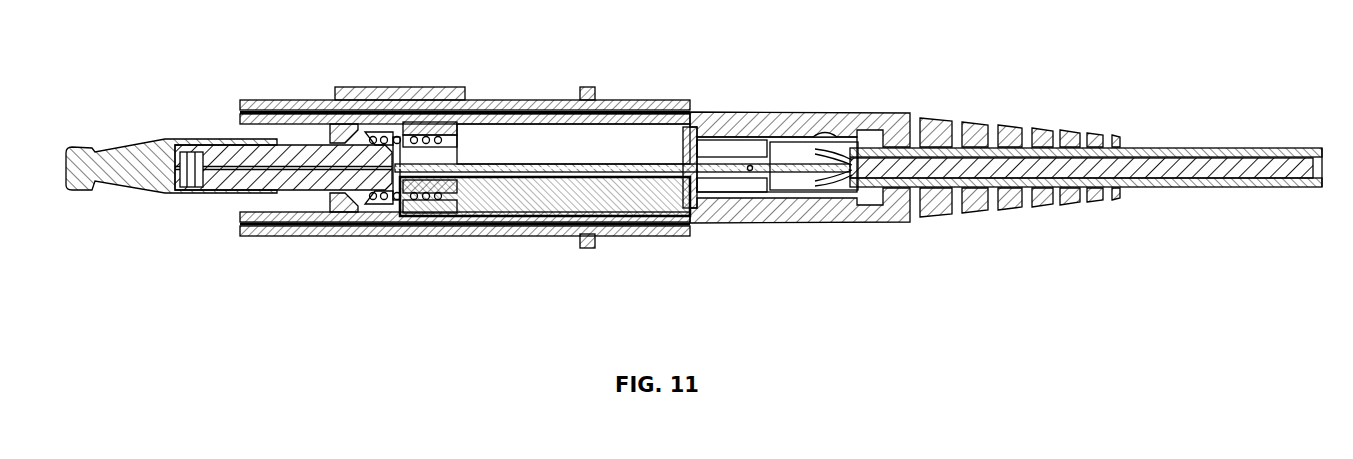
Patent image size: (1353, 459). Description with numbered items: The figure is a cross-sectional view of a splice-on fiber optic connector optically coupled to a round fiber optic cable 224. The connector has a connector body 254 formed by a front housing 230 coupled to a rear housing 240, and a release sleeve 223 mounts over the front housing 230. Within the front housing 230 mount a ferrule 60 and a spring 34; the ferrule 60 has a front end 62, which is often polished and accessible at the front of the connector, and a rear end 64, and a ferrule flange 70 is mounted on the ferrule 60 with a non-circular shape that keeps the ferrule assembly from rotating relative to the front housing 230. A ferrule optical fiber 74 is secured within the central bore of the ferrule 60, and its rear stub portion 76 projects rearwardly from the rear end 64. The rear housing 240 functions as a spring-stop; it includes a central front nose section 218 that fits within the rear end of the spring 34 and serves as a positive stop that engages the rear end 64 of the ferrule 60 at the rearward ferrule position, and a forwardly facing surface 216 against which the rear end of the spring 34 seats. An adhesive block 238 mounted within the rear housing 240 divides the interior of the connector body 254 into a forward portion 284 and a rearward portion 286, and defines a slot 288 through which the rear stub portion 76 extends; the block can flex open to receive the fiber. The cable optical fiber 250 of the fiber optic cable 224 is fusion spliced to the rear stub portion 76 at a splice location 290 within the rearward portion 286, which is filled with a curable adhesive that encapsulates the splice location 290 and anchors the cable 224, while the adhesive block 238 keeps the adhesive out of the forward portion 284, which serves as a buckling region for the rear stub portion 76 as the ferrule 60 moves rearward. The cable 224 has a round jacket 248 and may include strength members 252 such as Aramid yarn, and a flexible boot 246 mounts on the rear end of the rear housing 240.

The release sleeve 223 is at (283, 100).
The ferrule flange 70 is at (365, 135).
The front housing 230 is at (405, 125).
The spring 34 is at (440, 115).
The rear stub portion 76 is at (538, 165).
The forward portion 284 is at (613, 147).
The slot 288 is at (692, 125).
The splice location 290 is at (751, 162).
The strength members 252 is at (845, 130).
The flexible boot 246 is at (977, 130).
The jacket 248 is at (1153, 150).
The fiber optic cable 224 is at (1273, 147).
The front end 62 is at (183, 180).
The ferrule optical fiber 74 is at (228, 195).
The ferrule 60 is at (295, 215).
The central front nose section 218 is at (417, 205).
The rear end 64 is at (397, 200).
The forwardly facing surface 216 is at (443, 208).
The connector body 254 is at (572, 228).
The adhesive block 238 is at (687, 200).
The rear housing 240 is at (708, 215).
The rearward portion 286 is at (767, 187).
The cable optical fiber 250 is at (817, 180).